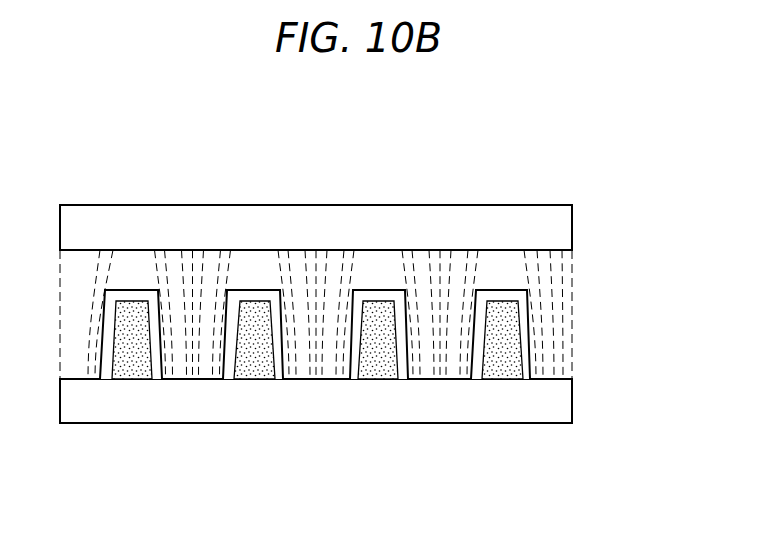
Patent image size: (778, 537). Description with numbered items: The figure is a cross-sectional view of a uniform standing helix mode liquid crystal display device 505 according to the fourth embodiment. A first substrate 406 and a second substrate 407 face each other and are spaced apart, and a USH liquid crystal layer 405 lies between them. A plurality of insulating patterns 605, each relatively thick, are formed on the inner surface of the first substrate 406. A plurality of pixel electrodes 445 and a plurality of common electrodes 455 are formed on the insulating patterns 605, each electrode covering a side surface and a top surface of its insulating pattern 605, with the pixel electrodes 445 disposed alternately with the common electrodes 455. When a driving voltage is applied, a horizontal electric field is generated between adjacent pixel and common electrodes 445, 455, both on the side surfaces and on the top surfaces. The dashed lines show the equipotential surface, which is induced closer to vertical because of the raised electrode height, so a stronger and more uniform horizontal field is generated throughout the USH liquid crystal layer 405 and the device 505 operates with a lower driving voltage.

The uniform standing helix mode liquid crystal display device 505 is at (550, 189).
The second substrate 407 is at (557, 227).
The first substrate 406 is at (555, 405).
The USH liquid crystal layer 405 is at (557, 298).
The pixel electrode 445 is at (131, 298).
The common electrode 455 is at (255, 298).
The insulating pattern 605 is at (508, 344).